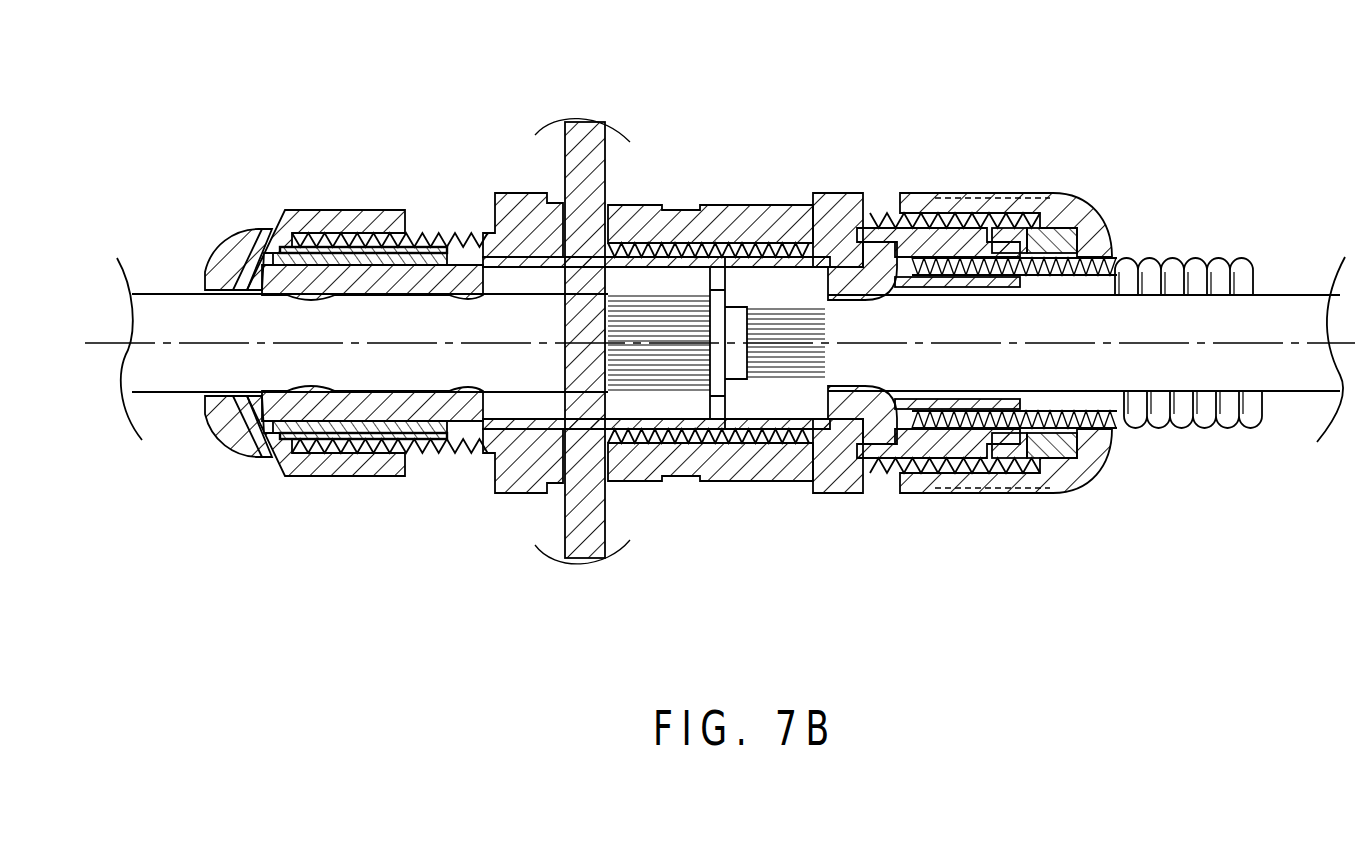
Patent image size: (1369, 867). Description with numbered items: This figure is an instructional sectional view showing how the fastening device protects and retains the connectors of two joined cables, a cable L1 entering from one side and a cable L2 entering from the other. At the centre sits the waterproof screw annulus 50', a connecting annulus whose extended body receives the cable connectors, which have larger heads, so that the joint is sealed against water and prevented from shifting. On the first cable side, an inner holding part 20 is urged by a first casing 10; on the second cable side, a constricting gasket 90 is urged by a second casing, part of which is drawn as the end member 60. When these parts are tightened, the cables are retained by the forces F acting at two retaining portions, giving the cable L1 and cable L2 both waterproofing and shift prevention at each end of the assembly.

The first casing 10 is at (278, 181).
The inner holding part 20 is at (354, 258).
The waterproof screw annulus 50' is at (752, 275).
The constricting gasket 90 is at (882, 216).
The end cap 60 is at (1076, 222).
The forces F is at (483, 447).
The cable L1 is at (175, 308).
The cable L2 is at (1290, 315).